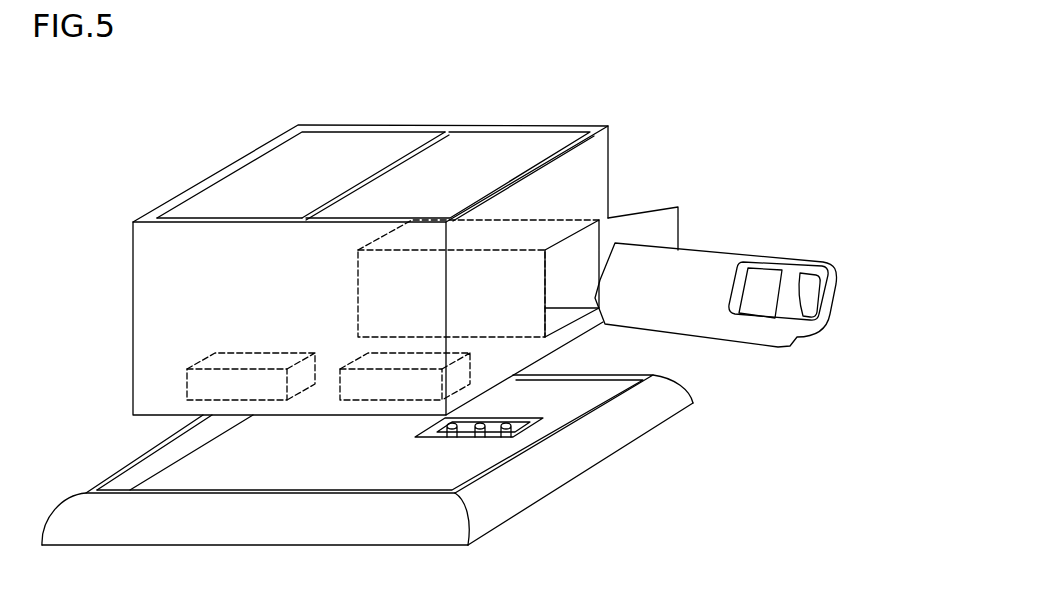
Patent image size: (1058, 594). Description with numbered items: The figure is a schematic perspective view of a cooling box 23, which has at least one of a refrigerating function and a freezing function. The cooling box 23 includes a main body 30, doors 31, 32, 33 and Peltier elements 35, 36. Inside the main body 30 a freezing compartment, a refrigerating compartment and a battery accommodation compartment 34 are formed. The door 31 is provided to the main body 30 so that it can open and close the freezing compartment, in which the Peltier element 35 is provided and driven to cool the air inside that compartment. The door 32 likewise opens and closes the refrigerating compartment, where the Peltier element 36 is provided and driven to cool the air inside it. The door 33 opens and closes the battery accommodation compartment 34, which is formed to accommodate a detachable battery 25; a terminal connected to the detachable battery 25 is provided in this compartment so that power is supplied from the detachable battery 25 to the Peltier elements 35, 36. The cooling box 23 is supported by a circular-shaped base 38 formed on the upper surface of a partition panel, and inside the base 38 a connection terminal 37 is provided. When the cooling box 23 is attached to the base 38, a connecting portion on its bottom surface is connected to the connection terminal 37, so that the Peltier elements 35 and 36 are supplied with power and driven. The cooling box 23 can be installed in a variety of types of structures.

The cooling box 23 is at (375, 126).
The detachable battery 25 is at (782, 260).
The main body 30 is at (435, 128).
The door 31 is at (392, 142).
The door 32 is at (382, 62).
The door 33 is at (678, 207).
The battery accommodation compartment 34 is at (527, 228).
The Peltier element 35 is at (248, 388).
The Peltier element 36 is at (387, 388).
The connection terminal 37 is at (520, 413).
The base 38 is at (512, 500).